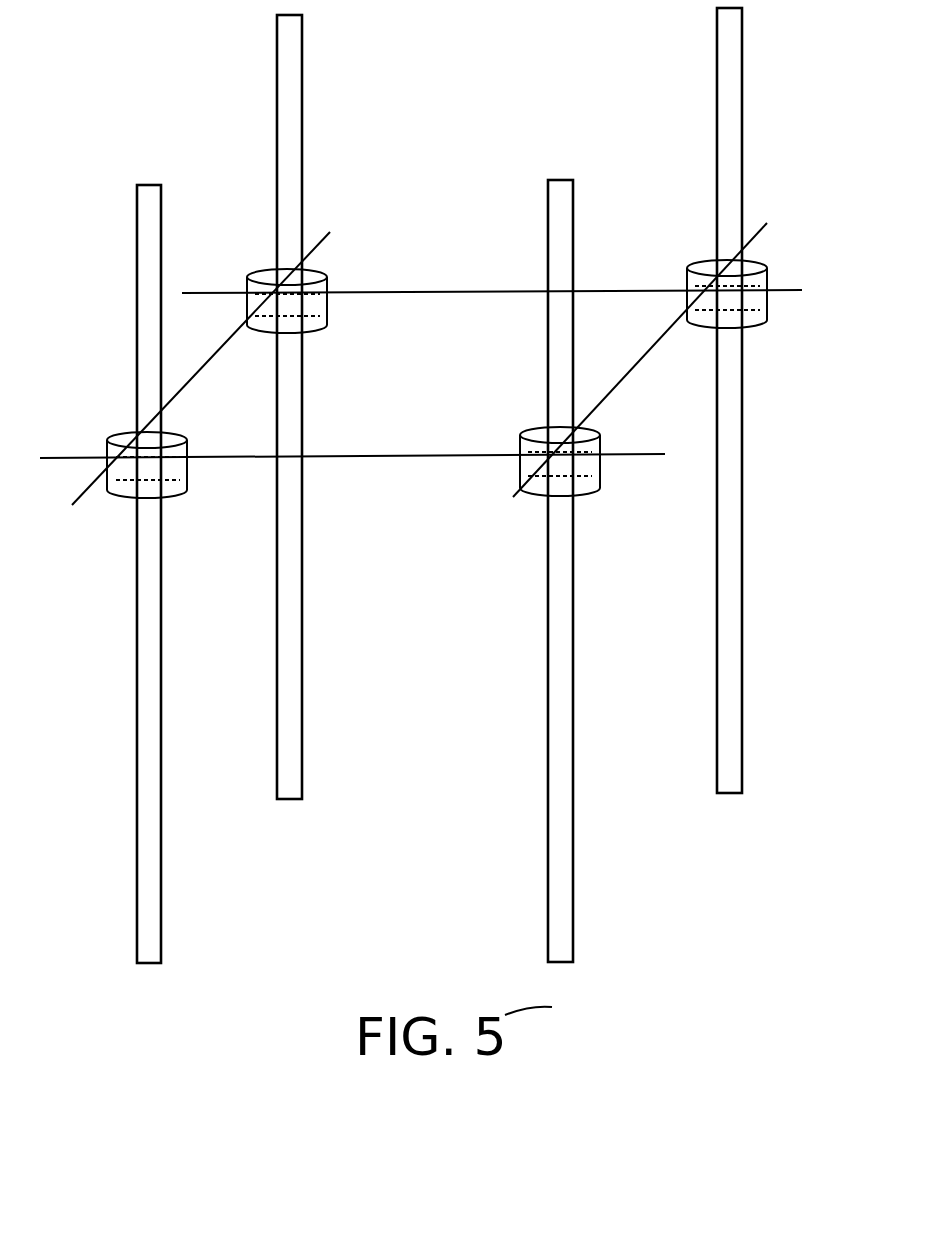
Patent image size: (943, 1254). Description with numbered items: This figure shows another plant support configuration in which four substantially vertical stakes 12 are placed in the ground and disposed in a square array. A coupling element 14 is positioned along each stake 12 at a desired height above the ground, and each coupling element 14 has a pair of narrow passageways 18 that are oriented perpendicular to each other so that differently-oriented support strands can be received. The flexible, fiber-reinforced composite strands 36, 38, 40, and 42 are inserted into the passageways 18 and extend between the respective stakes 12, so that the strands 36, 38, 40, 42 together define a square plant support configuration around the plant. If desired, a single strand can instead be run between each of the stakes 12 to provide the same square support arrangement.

The stake 12 is at (140, 780).
The coupling element 14 is at (313, 308).
The passageway 18 is at (318, 335).
The strand 36 is at (200, 365).
The strand 38 is at (365, 456).
The strand 40 is at (622, 378).
The strand 42 is at (447, 291).